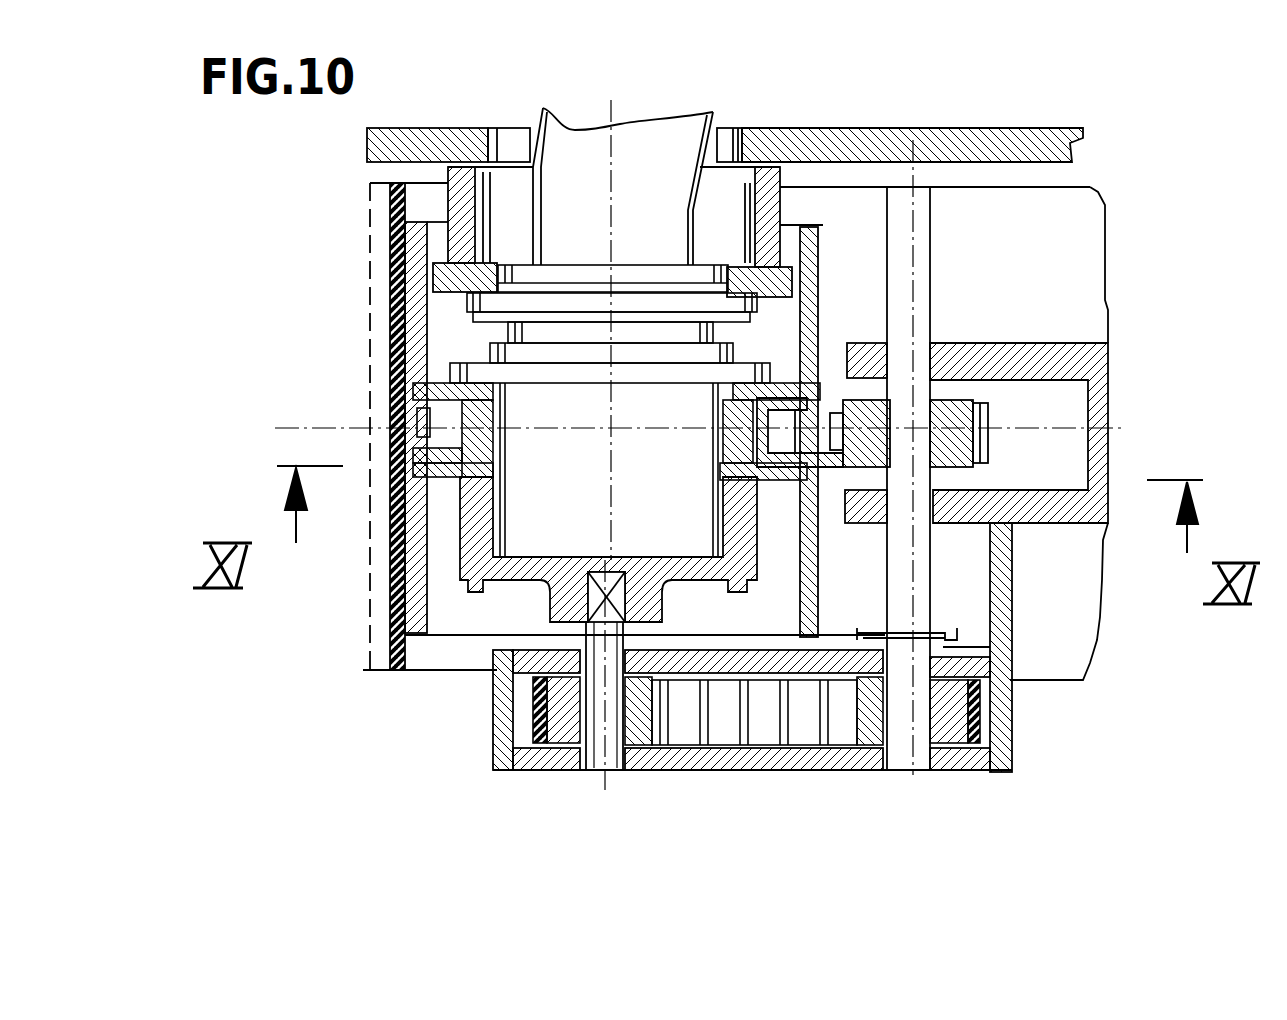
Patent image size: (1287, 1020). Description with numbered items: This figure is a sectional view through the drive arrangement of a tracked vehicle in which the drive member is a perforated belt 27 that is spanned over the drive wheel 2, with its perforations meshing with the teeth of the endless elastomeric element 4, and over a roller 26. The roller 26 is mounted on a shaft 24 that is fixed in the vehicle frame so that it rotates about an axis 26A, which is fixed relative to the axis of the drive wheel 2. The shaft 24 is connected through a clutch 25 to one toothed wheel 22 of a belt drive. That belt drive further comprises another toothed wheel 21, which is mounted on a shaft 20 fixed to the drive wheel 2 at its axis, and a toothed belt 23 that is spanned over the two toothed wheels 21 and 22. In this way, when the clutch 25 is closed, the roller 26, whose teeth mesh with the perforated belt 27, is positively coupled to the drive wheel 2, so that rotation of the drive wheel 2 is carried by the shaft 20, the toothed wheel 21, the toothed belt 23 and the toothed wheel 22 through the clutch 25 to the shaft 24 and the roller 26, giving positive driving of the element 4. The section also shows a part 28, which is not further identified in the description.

The endless elastomeric element 4 is at (395, 241).
The clamp 28 is at (438, 428).
The drive wheel 2 is at (473, 558).
The toothed wheel 21 is at (565, 742).
The shaft 20 is at (607, 745).
The toothed belt 23 is at (707, 720).
The toothed wheel 22 is at (875, 730).
The shaft 24 is at (917, 573).
The axis 26A is at (917, 243).
The roller 26 is at (955, 402).
The perforated belt 27 is at (993, 428).
The clutch 25 is at (948, 636).